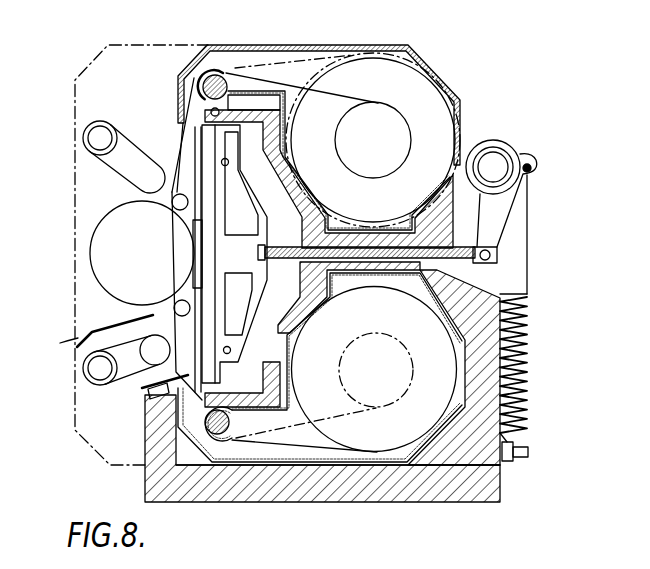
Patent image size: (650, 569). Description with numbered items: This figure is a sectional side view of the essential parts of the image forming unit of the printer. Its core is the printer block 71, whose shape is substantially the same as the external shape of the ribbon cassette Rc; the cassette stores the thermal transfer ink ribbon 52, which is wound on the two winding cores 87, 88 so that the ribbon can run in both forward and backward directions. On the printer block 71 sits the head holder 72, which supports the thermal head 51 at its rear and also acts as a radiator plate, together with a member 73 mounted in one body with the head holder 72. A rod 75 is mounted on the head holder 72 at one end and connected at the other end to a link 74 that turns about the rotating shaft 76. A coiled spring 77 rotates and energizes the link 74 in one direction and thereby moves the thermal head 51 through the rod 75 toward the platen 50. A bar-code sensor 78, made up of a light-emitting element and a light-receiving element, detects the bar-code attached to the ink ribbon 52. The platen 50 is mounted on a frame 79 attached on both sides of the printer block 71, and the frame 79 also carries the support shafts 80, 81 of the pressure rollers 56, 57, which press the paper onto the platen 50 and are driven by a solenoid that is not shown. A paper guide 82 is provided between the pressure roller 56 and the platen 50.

The frame 79 is at (168, 45).
The ribbon cassette Rc is at (322, 44).
The printer block 71 is at (340, 470).
The head holder 72 is at (283, 152).
The winding core 87 is at (382, 103).
The winding core 88 is at (391, 347).
The rod 75 is at (291, 261).
The rotating shaft 76 is at (494, 160).
The link 74 is at (506, 228).
The coiled spring 77 is at (527, 390).
The support shaft 81 is at (92, 142).
The pressure roller 57 is at (147, 199).
The support shaft 80 is at (93, 373).
The pressure roller 56 is at (143, 340).
The paper guide 82 is at (70, 342).
The platen 50 is at (93, 243).
The member 73 is at (178, 157).
The thermal transfer ink ribbon 52 is at (180, 137).
The thermal head 51 is at (192, 258).
The bar-code sensor 78 is at (144, 392).